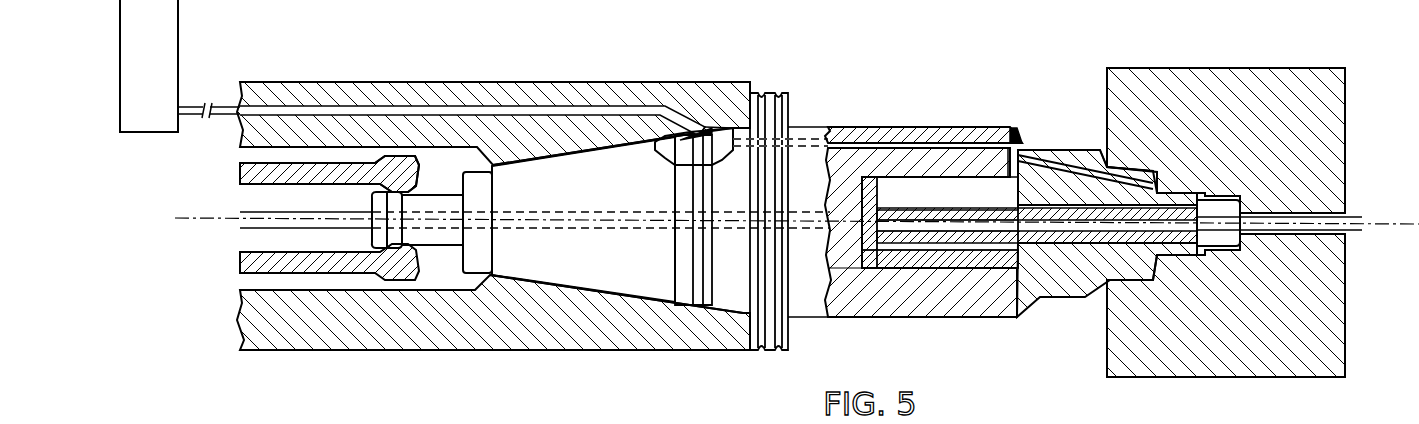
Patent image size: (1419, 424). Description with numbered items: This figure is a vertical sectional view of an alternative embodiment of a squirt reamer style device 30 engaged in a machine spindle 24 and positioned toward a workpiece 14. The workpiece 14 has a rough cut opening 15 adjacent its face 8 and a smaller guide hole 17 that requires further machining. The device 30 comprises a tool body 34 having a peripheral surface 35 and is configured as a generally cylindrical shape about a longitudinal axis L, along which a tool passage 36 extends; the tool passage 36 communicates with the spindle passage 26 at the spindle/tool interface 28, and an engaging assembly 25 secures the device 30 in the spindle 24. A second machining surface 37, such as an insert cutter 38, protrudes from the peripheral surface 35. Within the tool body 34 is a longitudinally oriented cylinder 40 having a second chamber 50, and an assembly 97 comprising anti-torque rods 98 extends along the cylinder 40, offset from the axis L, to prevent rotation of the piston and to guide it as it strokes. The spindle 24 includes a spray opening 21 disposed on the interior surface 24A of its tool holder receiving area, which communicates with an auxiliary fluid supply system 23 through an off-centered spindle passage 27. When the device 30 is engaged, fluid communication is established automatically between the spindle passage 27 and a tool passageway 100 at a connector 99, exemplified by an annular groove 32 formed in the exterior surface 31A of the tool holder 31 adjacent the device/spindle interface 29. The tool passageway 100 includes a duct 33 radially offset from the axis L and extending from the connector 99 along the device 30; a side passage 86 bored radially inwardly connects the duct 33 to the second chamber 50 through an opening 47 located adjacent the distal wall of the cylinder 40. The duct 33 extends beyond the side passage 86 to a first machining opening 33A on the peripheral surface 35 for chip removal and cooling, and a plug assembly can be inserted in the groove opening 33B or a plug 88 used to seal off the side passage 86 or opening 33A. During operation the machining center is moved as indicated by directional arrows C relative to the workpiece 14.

The face 8 is at (1102, 342).
The workpiece 14 is at (1290, 85).
The rough cut opening 15 is at (1203, 200).
The hole 17 is at (1298, 222).
The spray opening 21 is at (700, 128).
The fluid supply system 23 is at (136, 74).
The machine spindle 24 is at (450, 93).
The interior surface 24A is at (578, 152).
The engaging assembly 25 is at (402, 172).
The spindle passage 26 is at (297, 227).
The spindle passage 27 is at (318, 107).
The spindle/tool interface 28 is at (378, 192).
The device/spindle interface 29 is at (690, 125).
The device 30 is at (905, 121).
The tool holder 31 is at (558, 267).
The exterior surface 31A is at (528, 158).
The annular groove 32 is at (693, 304).
The duct 33 is at (843, 127).
The first machining opening 33A is at (1018, 152).
The groove opening 33B is at (673, 168).
The tool body 34 is at (865, 298).
The peripheral surface 35 is at (927, 127).
The tool passage 36 is at (658, 231).
The second machining surface 37 is at (1093, 137).
The insert cutter 38 is at (1103, 152).
The cylinder 40 is at (913, 282).
The opening 47 is at (1010, 188).
The second chamber 50 is at (897, 202).
The side passage 86 is at (993, 172).
The plug 88 is at (1013, 130).
The assembly for preventing rotation 97 is at (1003, 282).
The anti-torque rod 98 is at (942, 258).
The connector 99 is at (709, 126).
The tool passageway 100 is at (878, 121).
The directional arrows C is at (830, 65).
The longitudinal axis L is at (226, 217).